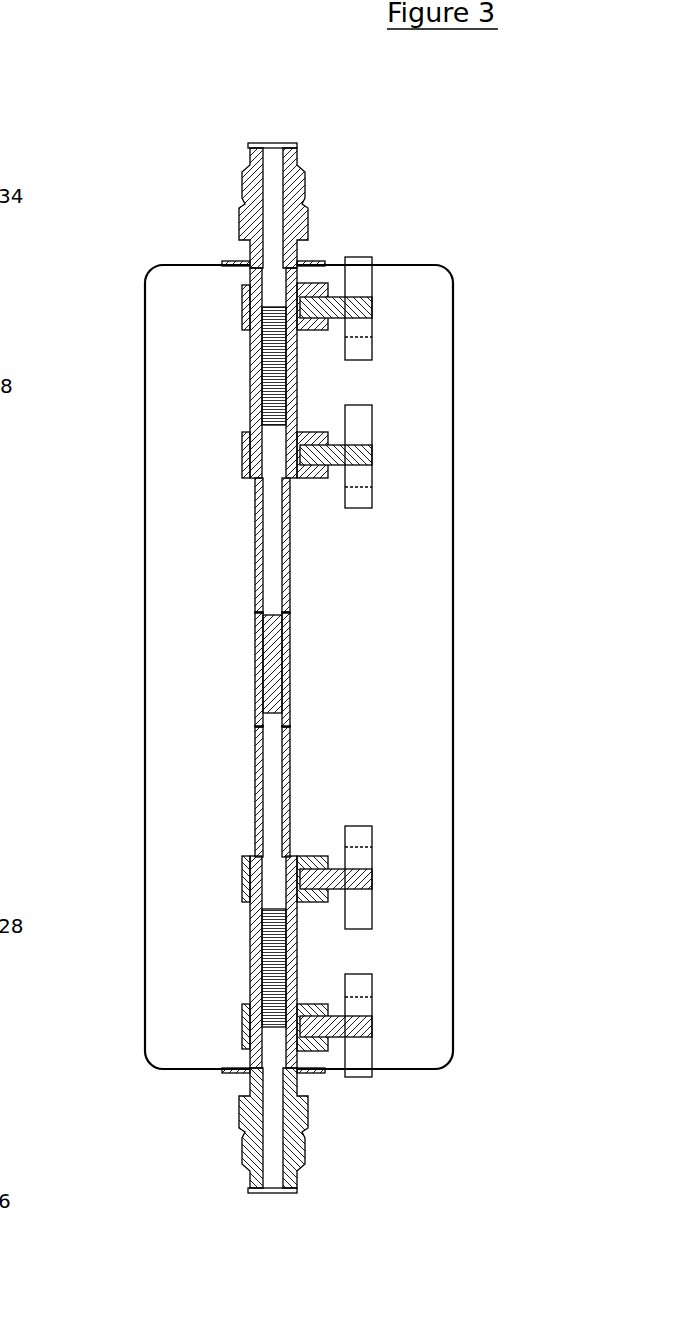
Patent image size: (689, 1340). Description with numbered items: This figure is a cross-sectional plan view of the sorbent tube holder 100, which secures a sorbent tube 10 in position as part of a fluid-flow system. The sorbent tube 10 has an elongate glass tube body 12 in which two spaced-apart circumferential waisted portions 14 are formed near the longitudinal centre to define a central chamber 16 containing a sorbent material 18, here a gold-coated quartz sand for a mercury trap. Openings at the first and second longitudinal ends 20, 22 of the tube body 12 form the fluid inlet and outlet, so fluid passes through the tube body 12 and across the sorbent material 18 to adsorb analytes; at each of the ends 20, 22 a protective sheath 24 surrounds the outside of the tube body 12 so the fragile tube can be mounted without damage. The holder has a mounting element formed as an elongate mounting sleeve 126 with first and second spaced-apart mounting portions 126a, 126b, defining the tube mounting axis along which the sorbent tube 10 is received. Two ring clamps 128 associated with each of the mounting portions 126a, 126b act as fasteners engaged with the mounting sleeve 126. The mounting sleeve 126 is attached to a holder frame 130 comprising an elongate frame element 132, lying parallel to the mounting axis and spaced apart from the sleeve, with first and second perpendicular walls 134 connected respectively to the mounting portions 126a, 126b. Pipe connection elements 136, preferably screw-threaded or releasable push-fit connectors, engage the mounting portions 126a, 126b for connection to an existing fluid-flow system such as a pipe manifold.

The sorbent tube holder 100 is at (173, 185).
The holder frame 130 is at (128, 820).
The frame element 132 is at (428, 780).
The pipe connection elements 136 is at (302, 183).
The perpendicular walls 134 is at (312, 262).
The first longitudinal end 20 is at (253, 262).
The second longitudinal end 22 is at (245, 1069).
The mounting sleeve 126 is at (151, 668).
The first mounting portion 126a is at (250, 393).
The second mounting portion 126b is at (248, 965).
The protective sheath 24 is at (280, 378).
The ring clamps 128 is at (365, 316).
The sorbent tube 10 is at (256, 575).
The tube body 12 is at (290, 765).
The central chamber 16 is at (288, 635).
The sorbent material 18 is at (273, 657).
The waisted portions 14 is at (260, 613).